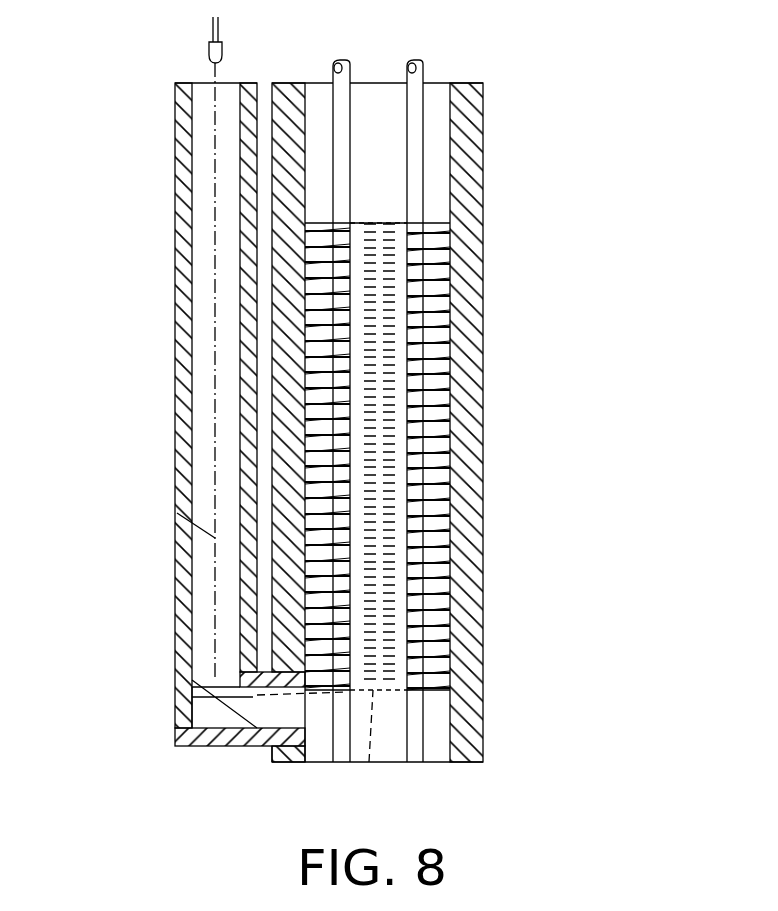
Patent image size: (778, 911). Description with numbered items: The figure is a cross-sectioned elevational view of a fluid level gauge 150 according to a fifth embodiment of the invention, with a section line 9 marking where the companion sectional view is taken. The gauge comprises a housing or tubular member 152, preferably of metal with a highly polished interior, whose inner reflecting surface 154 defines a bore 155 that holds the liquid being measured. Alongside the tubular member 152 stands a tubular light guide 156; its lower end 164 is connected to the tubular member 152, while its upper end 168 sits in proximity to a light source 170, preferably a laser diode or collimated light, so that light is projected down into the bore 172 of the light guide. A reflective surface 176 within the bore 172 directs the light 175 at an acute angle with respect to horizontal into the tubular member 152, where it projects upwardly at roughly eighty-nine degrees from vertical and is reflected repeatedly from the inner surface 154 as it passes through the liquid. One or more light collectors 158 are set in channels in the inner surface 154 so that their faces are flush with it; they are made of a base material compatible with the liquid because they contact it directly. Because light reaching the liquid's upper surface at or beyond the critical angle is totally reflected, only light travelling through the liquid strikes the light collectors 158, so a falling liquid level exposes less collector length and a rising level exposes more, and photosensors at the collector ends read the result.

The fluid level gauge 150 is at (660, 157).
The tubular member 152 is at (492, 513).
The inner reflecting surface 154 is at (436, 112).
The bore 155 is at (384, 104).
The tubular light guide 156 is at (166, 449).
The light collectors 158 is at (343, 70).
The lower end 164 is at (227, 737).
The upper end 168 is at (184, 125).
The light source 170 is at (208, 50).
The bore 172 is at (198, 286).
The light 175 is at (177, 513).
The reflective surface 176 is at (387, 222).
The section line 9- 9 is at (117, 410).